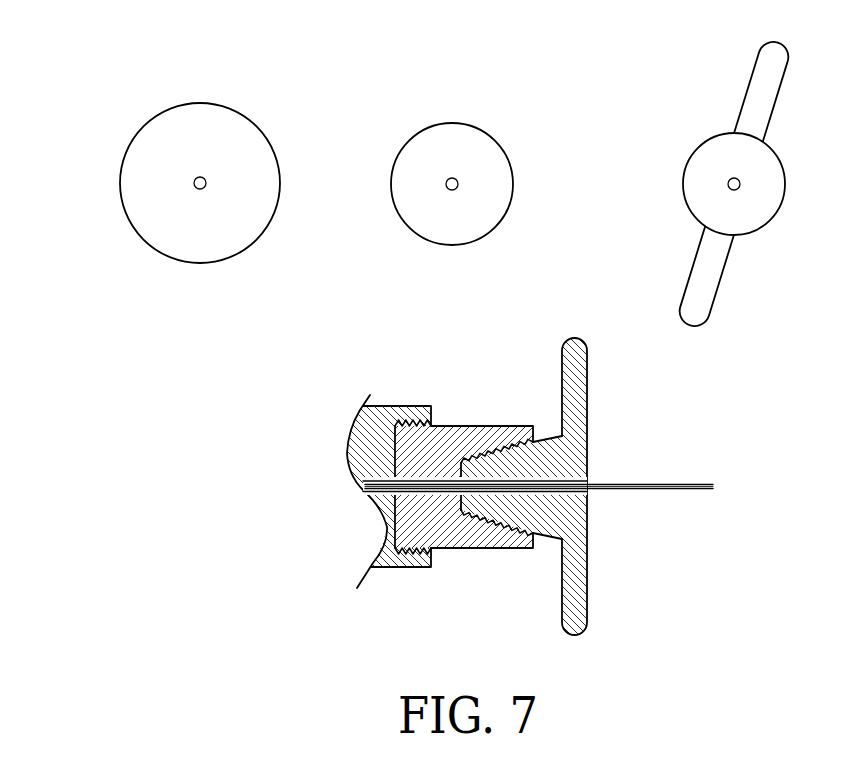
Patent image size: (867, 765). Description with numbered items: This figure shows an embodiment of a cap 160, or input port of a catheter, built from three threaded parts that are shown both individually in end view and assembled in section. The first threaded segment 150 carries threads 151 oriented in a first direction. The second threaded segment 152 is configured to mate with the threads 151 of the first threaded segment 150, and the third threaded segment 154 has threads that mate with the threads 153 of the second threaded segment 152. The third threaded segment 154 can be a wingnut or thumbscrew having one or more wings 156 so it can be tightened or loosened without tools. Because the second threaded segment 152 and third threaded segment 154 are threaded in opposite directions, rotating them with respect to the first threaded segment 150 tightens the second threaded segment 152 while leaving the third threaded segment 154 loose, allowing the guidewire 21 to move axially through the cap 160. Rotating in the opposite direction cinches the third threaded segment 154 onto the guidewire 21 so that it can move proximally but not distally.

The guidewire 21 is at (662, 490).
The first threaded segment 150 is at (156, 115).
The threads 151 is at (412, 420).
The second threaded segment 152 is at (425, 128).
The threads 153 is at (495, 526).
The third threaded segment 154 is at (768, 225).
The wings 156 is at (748, 88).
The cap 160 is at (332, 384).